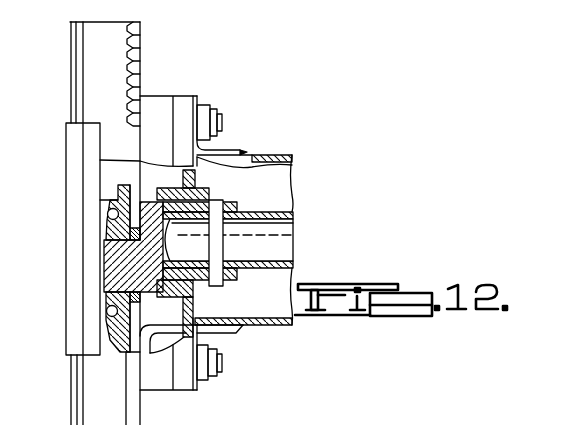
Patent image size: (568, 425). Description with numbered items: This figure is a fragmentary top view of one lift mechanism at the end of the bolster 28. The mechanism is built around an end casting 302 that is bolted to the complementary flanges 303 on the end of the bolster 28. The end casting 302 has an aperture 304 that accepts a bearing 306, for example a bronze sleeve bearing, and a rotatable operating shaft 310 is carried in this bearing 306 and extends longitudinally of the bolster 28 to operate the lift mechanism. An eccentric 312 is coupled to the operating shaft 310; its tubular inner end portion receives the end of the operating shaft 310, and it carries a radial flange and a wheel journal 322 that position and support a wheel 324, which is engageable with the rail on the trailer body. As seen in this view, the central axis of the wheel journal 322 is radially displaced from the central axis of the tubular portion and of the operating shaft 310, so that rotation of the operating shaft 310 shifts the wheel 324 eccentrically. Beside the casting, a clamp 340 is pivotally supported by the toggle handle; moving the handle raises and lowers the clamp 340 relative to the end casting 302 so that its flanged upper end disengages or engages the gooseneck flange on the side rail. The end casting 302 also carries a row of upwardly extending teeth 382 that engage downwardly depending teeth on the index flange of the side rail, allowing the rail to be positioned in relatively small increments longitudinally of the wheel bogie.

The teeth 382 is at (140, 43).
The clamp 340 is at (64, 173).
The wheel journal 322 is at (105, 264).
The wheel 324 is at (116, 352).
The eccentric 312 is at (153, 303).
The aperture 304 is at (201, 191).
The operating shaft 310 is at (282, 259).
The bearing 306 is at (208, 291).
The bolster 28 is at (291, 148).
The flanges 303 is at (220, 148).
The end casting 302 is at (150, 414).